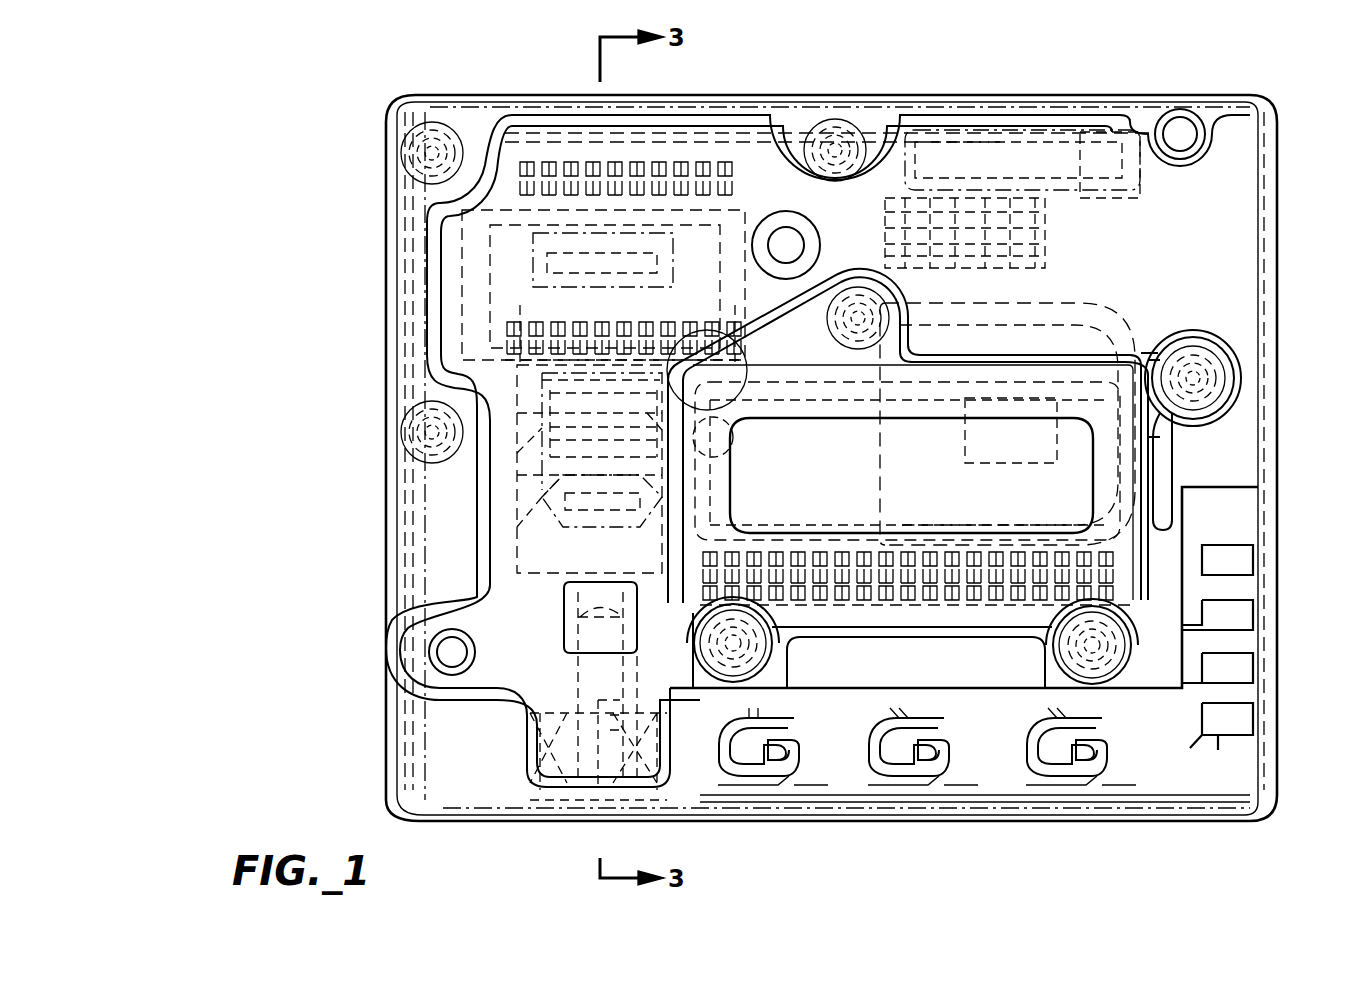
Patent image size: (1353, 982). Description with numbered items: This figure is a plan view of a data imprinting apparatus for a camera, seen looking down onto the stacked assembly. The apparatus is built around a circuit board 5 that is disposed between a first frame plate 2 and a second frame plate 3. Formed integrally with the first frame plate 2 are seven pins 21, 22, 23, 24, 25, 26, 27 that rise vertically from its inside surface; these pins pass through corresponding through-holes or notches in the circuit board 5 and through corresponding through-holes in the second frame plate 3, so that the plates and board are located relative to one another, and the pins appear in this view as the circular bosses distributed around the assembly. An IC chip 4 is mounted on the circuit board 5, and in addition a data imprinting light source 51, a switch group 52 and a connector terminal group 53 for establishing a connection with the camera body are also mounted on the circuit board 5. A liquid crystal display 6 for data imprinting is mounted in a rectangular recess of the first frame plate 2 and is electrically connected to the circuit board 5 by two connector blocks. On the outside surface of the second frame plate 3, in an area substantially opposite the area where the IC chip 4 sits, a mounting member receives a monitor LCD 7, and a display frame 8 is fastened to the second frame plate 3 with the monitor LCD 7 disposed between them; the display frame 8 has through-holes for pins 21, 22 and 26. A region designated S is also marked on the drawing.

The first frame plate 2 is at (498, 808).
The second frame plate 3 is at (467, 703).
The IC chip 4 is at (1060, 462).
The circuit board 5 is at (1198, 795).
The liquid crystal display for data imprinting 6 is at (640, 165).
The monitor LCD 7 is at (935, 400).
The display frame 8 is at (1063, 420).
The pin 21 is at (1095, 650).
The pin 22 is at (733, 650).
The pin 23 is at (432, 432).
The pin 24 is at (437, 152).
The pin 25 is at (835, 150).
The pin 26 is at (860, 318).
The pin 27 is at (1196, 378).
The data imprinting light source 51 is at (600, 703).
The switch group 52 is at (1060, 752).
The connector terminal group 53 is at (1275, 642).
The seal groove S is at (706, 330).